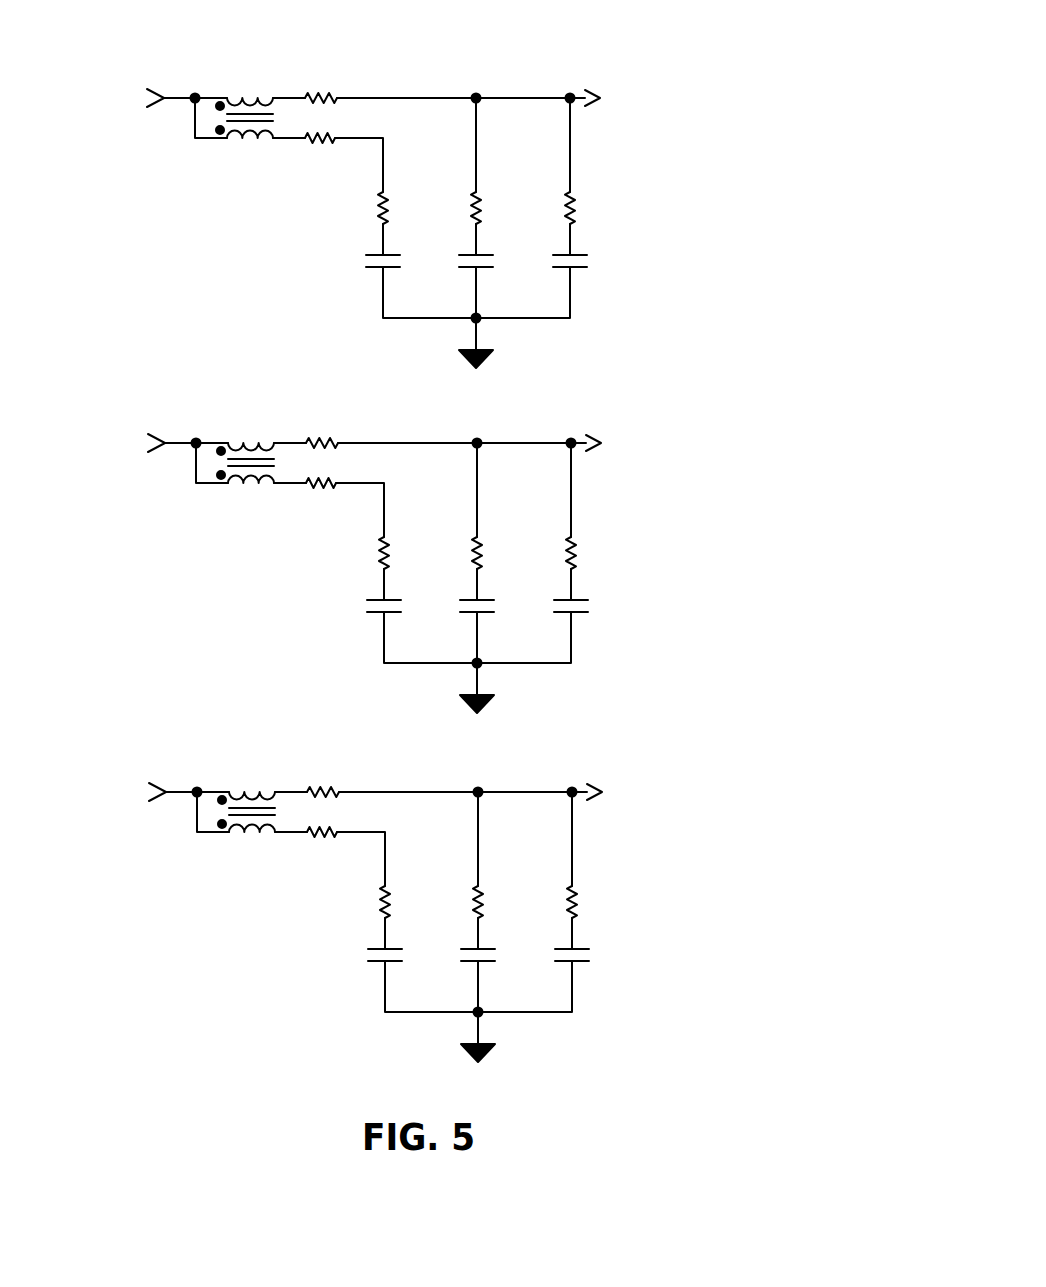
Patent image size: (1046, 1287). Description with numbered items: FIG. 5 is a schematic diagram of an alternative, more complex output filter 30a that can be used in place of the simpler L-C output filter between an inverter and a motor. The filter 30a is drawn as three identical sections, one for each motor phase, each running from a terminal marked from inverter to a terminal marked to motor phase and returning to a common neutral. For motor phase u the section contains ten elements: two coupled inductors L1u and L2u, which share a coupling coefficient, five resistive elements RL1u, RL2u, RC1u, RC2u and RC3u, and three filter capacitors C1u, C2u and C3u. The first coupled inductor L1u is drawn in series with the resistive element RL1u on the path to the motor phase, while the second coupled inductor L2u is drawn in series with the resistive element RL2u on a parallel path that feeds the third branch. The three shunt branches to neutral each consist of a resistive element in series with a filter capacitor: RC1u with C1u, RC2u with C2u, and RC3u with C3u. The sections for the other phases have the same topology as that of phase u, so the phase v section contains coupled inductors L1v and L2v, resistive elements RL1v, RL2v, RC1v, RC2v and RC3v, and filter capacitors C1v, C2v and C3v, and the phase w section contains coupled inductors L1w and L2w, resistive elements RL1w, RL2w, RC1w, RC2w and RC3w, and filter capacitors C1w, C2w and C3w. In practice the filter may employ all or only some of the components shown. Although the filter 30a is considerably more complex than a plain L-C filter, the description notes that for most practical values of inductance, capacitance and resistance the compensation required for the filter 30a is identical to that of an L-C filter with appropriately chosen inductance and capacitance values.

The output filter 30a is at (94, 31).
The coupled inductor L1u is at (244, 95).
The coupled inductor L2u is at (244, 145).
The resistive element RL1u is at (319, 86).
The resistive element RL2u is at (319, 149).
The resistive element RC1u is at (455, 208).
The resistive element RC2u is at (549, 208).
The resistive element RC3u is at (362, 208).
The filter capacitor C1u is at (461, 263).
The filter capacitor C2u is at (555, 263).
The filter capacitor C3u is at (368, 263).
The coupled inductor L1v is at (245, 440).
The coupled inductor L2v is at (245, 490).
The resistive element RL1v is at (320, 431).
The resistive element RL2v is at (320, 494).
The resistive element RC1v is at (456, 553).
The resistive element RC2v is at (550, 553).
The resistive element RC3v is at (363, 553).
The filter capacitor C1v is at (462, 608).
The filter capacitor C2v is at (556, 608).
The filter capacitor C3v is at (369, 608).
The coupled inductor L1w is at (246, 789).
The coupled inductor L2w is at (246, 839).
The resistive element RL1w is at (321, 780).
The resistive element RL2w is at (321, 843).
The resistive element RC1w is at (457, 902).
The resistive element RC2w is at (551, 902).
The resistive element RC3w is at (364, 902).
The filter capacitor C1w is at (463, 957).
The filter capacitor C2w is at (557, 957).
The filter capacitor C3w is at (370, 957).